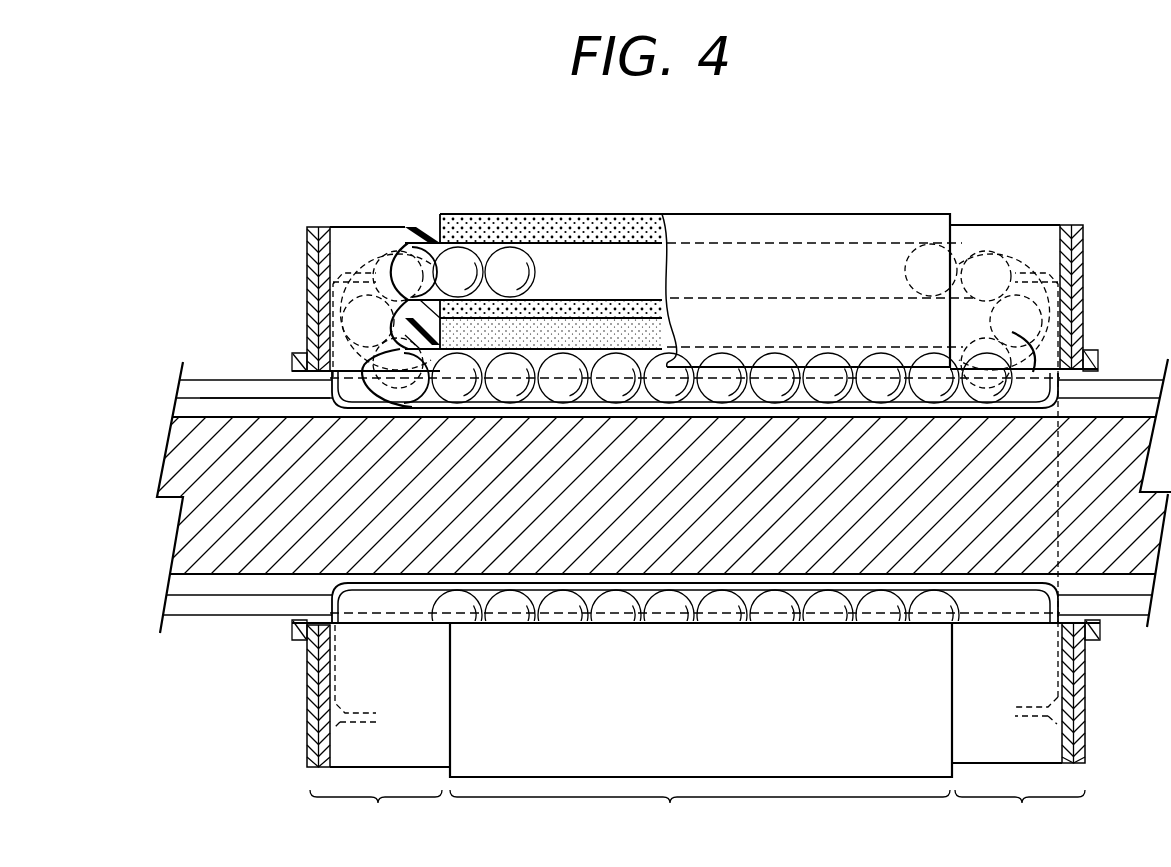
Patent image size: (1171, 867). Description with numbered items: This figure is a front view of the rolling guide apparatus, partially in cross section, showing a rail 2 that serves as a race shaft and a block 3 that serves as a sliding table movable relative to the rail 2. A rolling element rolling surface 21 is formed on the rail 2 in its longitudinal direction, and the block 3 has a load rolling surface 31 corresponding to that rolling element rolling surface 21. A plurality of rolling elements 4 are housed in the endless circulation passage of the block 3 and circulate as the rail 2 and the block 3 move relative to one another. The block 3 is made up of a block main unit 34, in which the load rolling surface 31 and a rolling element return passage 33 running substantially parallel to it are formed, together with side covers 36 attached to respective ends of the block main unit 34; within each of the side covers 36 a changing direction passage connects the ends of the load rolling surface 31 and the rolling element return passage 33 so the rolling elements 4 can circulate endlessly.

The rail 2 is at (212, 368).
The rolling element rolling surface 21 is at (257, 388).
The block 3 is at (842, 206).
The load rolling surface 31 is at (567, 368).
The rolling element return passage 33 is at (606, 262).
The rolling elements 4 is at (460, 258).
The block main unit 34 is at (700, 814).
The side covers 36 is at (697, 814).